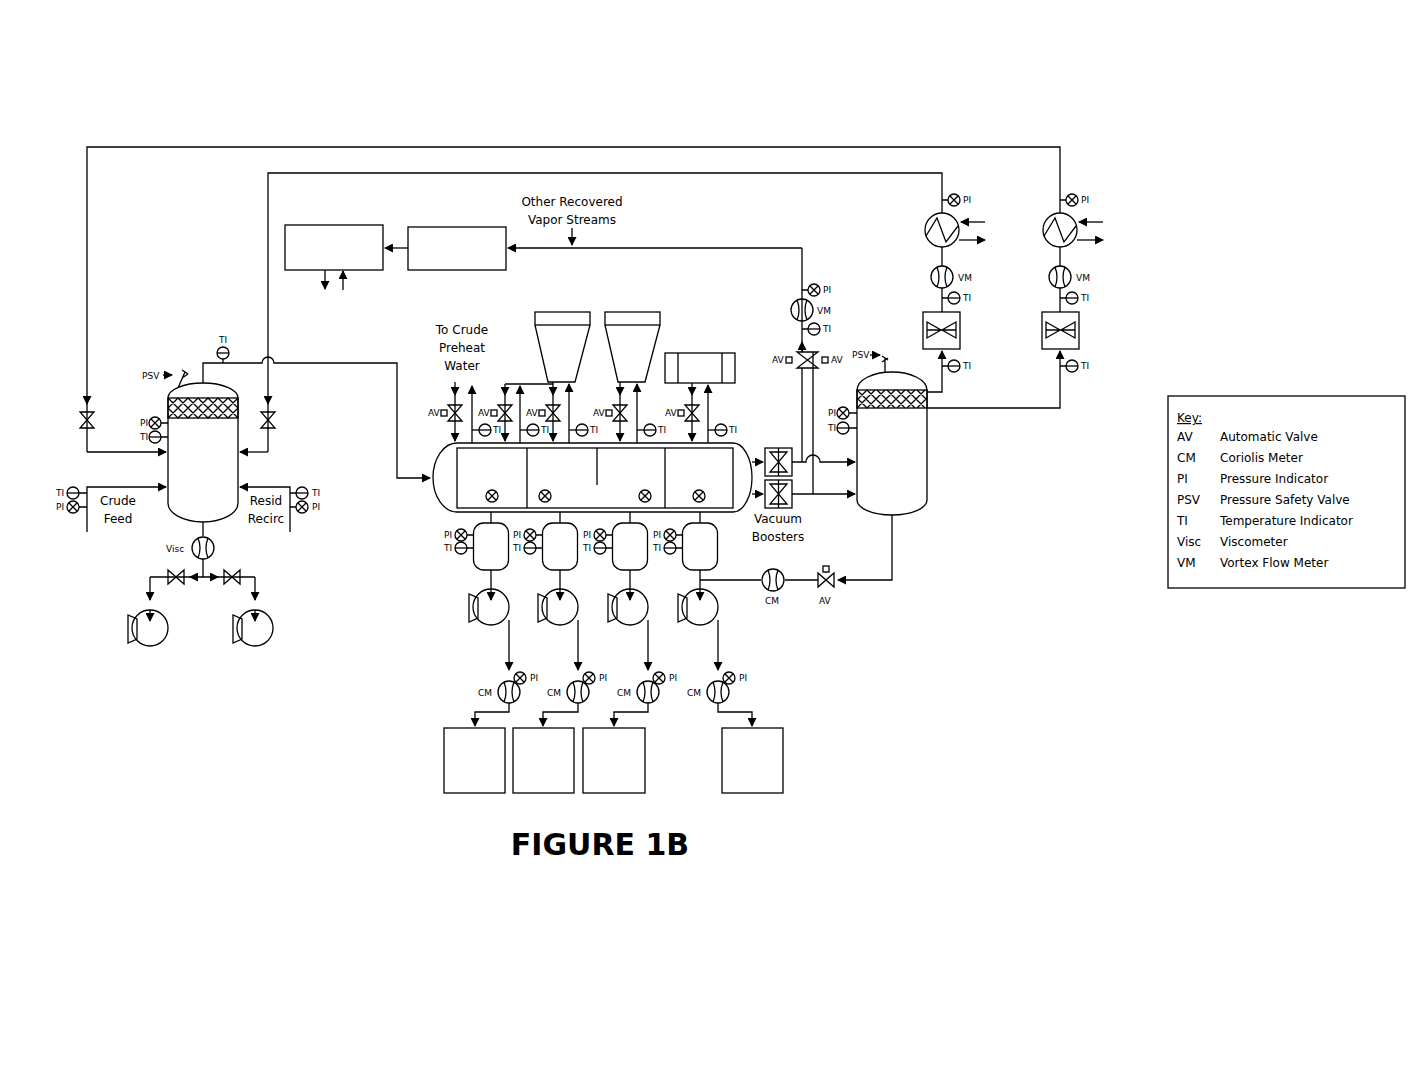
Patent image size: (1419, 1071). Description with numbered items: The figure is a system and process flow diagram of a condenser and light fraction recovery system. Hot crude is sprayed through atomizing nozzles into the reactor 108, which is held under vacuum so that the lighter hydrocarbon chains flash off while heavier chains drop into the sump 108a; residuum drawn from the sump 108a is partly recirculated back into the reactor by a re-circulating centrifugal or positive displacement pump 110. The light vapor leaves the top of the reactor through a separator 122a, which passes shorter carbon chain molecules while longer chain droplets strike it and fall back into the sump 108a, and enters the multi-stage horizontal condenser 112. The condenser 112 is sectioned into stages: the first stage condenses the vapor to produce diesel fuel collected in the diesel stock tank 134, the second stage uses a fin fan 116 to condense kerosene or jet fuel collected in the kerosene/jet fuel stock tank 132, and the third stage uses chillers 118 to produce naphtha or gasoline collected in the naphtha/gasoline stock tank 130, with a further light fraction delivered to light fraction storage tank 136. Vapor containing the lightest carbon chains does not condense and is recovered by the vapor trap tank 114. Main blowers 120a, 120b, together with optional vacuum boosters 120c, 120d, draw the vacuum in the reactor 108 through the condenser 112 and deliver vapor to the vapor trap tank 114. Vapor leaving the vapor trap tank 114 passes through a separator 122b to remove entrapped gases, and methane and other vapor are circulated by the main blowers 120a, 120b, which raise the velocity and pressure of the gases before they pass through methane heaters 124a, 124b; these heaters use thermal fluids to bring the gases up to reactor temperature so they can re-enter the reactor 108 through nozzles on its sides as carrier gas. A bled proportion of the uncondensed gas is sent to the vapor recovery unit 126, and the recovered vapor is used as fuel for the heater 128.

The reactor 108 is at (200, 452).
The sump 108a is at (188, 520).
The pump 110 is at (128, 634).
The multi-stage horizontal condenser 112 is at (432, 494).
The vapor trap tank 114 is at (895, 443).
The fin fan 116 is at (597, 330).
The chiller 118 is at (700, 332).
The main blower 120a is at (949, 331).
The main blower 120b is at (1046, 356).
The vacuum booster 120c is at (779, 454).
The vacuum booster 120d is at (793, 503).
The separator 122a is at (167, 406).
The separator 122b is at (857, 399).
The methane heater 124a is at (963, 230).
The methane heater 124b is at (1050, 216).
The vapor recovery unit 126 is at (457, 238).
The heater 128 is at (334, 271).
The naphtha/gasoline stock tank 130 is at (770, 730).
The kerosene/jet fuel stock tank 132 is at (632, 730).
The diesel stock tank 134 is at (562, 730).
The light fraction storage tank 136 is at (493, 730).